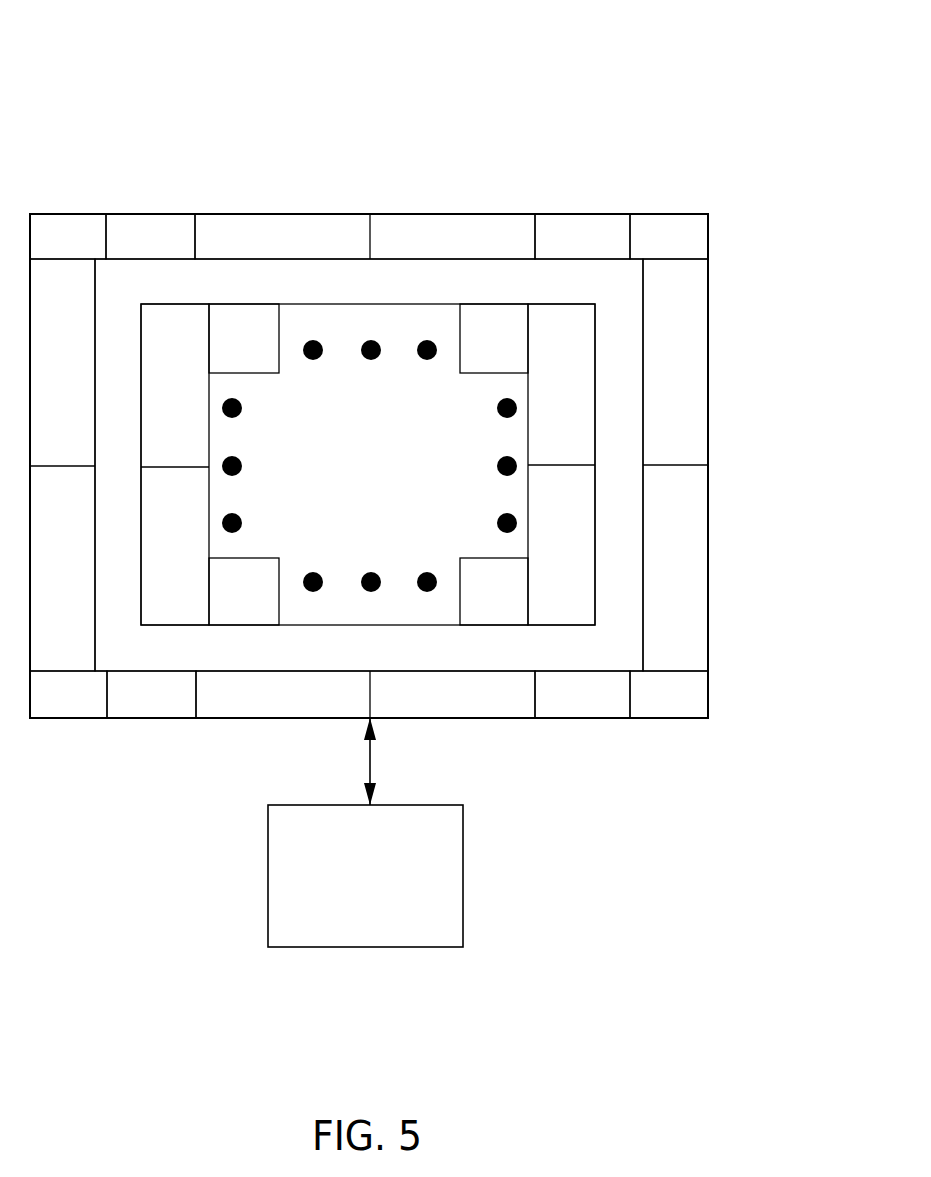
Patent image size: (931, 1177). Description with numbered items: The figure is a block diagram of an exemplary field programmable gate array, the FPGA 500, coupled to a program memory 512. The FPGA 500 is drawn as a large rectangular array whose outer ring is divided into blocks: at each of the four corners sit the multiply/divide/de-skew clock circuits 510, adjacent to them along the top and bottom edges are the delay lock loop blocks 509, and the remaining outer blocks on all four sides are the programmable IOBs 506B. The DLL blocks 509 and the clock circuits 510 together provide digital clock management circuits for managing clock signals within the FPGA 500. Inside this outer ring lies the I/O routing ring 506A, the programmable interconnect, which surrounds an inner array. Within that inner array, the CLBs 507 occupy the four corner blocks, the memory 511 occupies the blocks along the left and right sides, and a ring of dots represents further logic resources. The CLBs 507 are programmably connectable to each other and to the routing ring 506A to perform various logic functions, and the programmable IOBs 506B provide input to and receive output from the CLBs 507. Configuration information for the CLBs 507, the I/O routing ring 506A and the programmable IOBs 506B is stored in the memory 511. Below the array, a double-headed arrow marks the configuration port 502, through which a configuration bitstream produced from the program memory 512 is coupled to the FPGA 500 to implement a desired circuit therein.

The FPGA 500 is at (689, 112).
The configuration port 502 is at (370, 762).
The I/O routing ring 506A is at (402, 297).
The programmable IOBs 506B is at (92, 382).
The CLBs 507 is at (268, 355).
The delay lock loop (DLL) blocks 509 is at (177, 252).
The multiply/divide/de-skew clock circuits 510 is at (85, 252).
The memory 511 is at (196, 401).
The program memory 512 is at (388, 924).